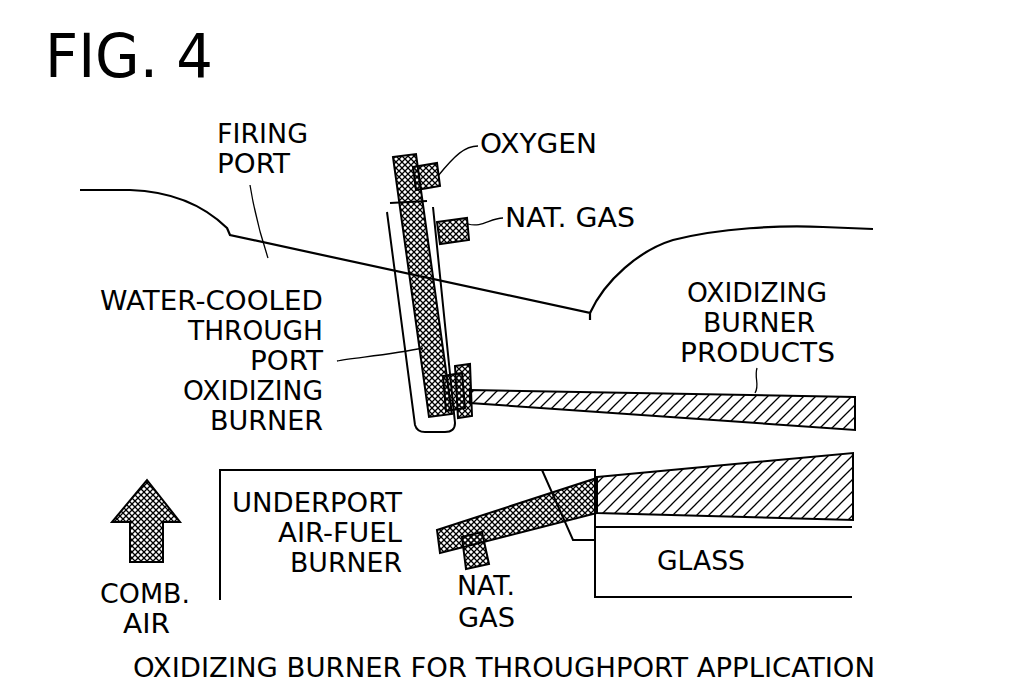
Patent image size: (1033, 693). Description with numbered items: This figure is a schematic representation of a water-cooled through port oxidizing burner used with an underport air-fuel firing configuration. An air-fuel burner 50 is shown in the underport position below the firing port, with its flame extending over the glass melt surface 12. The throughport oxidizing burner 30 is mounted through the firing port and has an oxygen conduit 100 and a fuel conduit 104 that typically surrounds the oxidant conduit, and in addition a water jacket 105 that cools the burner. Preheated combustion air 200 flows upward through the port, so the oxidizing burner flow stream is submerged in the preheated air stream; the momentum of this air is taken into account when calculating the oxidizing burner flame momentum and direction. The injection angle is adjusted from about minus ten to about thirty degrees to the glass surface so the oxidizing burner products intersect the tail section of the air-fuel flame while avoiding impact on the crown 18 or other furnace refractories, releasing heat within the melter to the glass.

The glass melt surface 12 is at (723, 562).
The crown 18 is at (730, 233).
The throughport oxidizing burner 30 is at (463, 260).
The air-fuel burner 50 is at (437, 540).
The oxygen conduit 100 is at (428, 165).
The fuel conduit 104 is at (453, 218).
The water jacket 105 is at (387, 225).
The preheated combustion air 200 is at (137, 504).